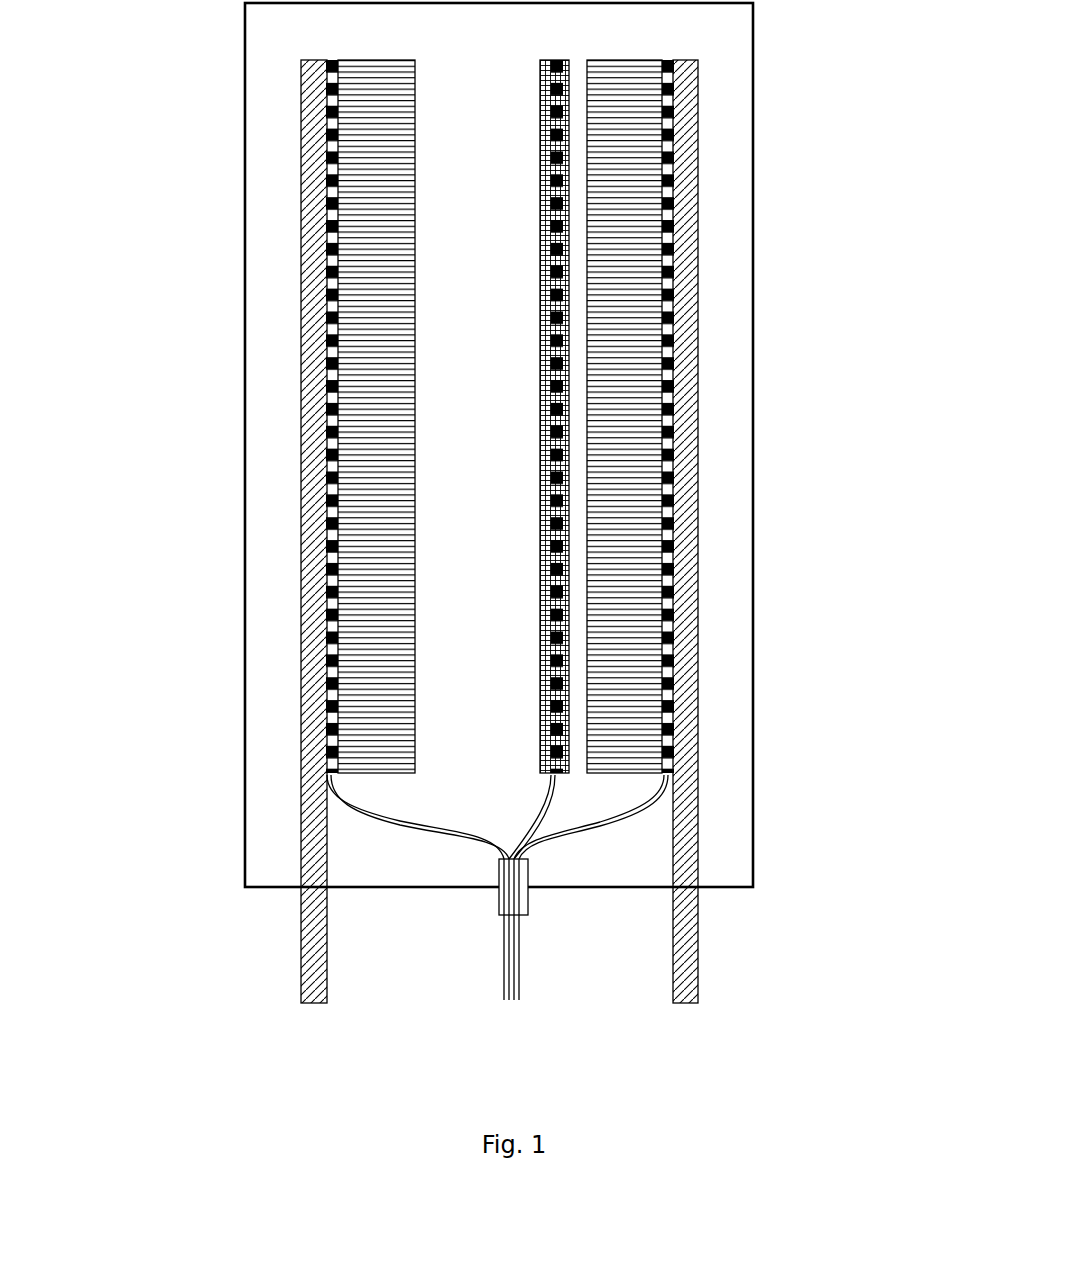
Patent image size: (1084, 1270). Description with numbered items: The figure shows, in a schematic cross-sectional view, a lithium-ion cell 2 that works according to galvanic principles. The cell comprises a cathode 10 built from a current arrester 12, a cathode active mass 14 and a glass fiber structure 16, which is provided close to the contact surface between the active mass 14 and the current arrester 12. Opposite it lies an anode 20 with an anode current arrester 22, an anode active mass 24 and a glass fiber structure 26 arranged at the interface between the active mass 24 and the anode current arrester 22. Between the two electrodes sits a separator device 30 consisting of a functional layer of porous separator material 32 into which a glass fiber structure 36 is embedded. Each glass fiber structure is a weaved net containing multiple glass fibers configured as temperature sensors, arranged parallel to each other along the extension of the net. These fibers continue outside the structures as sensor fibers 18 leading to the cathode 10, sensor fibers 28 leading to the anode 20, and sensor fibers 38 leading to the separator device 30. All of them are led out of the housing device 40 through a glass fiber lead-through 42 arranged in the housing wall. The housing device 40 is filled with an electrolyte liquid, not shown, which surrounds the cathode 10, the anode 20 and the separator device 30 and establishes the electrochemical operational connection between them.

The lithium-ion cell 2 is at (212, 387).
The cathode 10 is at (292, 494).
The current arrester 12 is at (303, 172).
The cathode active mass 14 is at (416, 258).
The glass fiber structure 16 is at (334, 60).
The sensor fibers 18 is at (408, 826).
The anode 20 is at (713, 507).
The anode current arrester 22 is at (698, 188).
The anode active mass 24 is at (622, 60).
The glass fiber structure 26 is at (670, 60).
The sensor fibers 28 is at (575, 823).
The separator device 30 is at (533, 507).
The separator material 32 is at (541, 300).
The glass fiber structure 36 is at (555, 60).
The sensor fibers 38 is at (524, 831).
The housing device 40 is at (753, 745).
The lead-through 42 is at (528, 903).